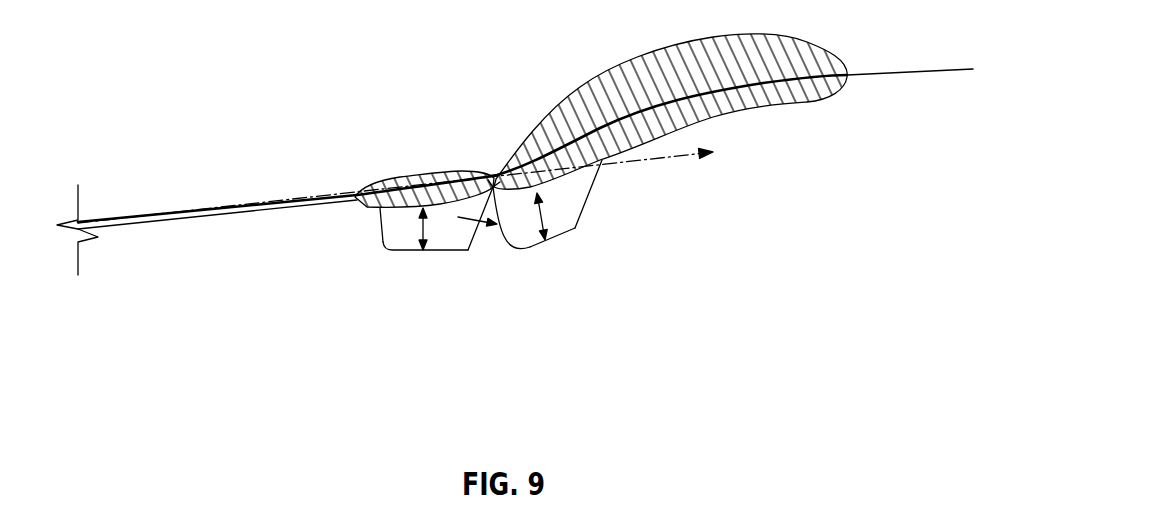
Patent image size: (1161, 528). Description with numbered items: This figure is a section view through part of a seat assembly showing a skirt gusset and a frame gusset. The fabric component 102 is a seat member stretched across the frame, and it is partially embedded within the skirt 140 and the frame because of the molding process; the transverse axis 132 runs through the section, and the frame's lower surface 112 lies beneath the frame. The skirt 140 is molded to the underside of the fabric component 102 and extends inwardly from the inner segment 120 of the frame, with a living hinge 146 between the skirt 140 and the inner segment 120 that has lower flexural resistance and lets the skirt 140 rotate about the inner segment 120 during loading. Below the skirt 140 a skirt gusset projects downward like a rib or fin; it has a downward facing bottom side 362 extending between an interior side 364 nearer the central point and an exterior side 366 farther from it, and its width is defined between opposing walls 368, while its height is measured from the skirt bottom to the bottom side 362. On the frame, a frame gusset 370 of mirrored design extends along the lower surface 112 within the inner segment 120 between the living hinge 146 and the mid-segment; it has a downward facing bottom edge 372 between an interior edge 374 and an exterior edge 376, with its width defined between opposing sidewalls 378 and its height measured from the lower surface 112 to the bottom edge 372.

The fabric component 102 is at (242, 215).
The lower surface 112 is at (760, 103).
The inner segment 120 is at (523, 156).
The transverse axis 132 is at (180, 211).
The skirt 140 is at (413, 180).
The living hinge 146 is at (495, 176).
The bottom side 362 is at (402, 302).
The interior side 364 is at (377, 232).
The exterior side 366 is at (478, 242).
The opposing walls 368 is at (437, 250).
The frame gusset 370 is at (583, 277).
The bottom edge 372 is at (540, 247).
The interior edge 374 is at (490, 228).
The exterior edge 376 is at (598, 183).
The opposing sidewalls 378 is at (523, 240).